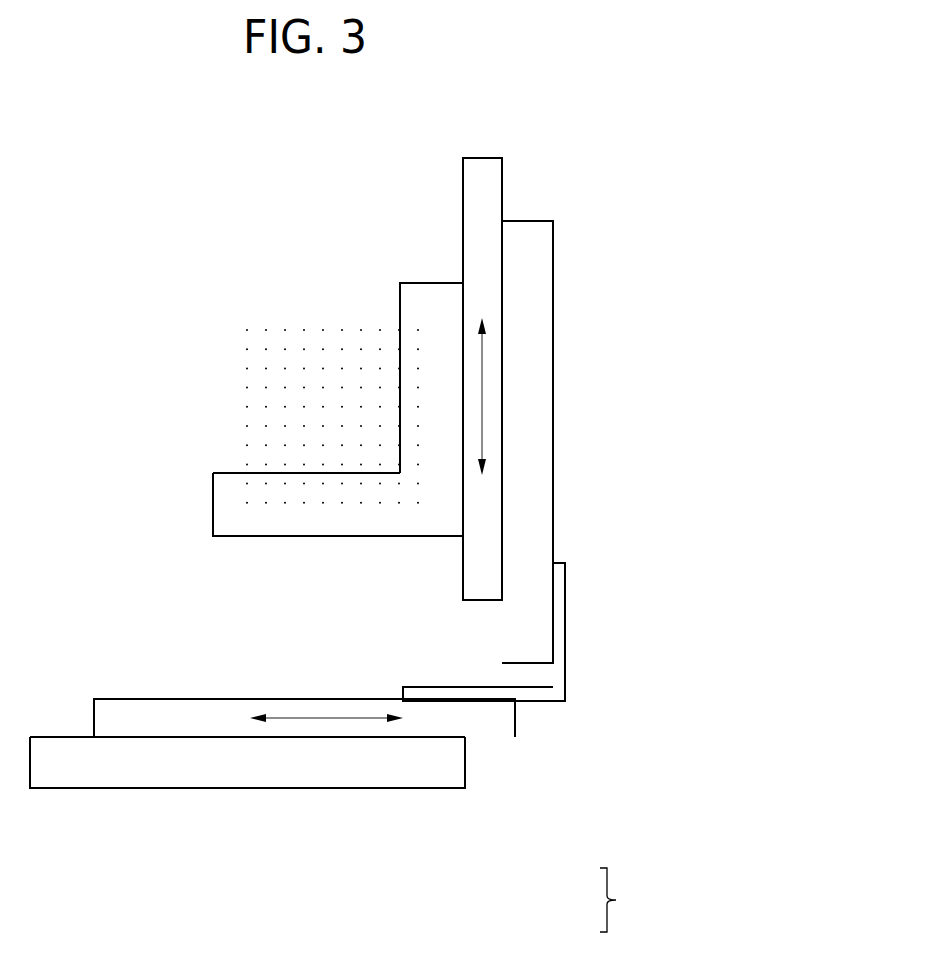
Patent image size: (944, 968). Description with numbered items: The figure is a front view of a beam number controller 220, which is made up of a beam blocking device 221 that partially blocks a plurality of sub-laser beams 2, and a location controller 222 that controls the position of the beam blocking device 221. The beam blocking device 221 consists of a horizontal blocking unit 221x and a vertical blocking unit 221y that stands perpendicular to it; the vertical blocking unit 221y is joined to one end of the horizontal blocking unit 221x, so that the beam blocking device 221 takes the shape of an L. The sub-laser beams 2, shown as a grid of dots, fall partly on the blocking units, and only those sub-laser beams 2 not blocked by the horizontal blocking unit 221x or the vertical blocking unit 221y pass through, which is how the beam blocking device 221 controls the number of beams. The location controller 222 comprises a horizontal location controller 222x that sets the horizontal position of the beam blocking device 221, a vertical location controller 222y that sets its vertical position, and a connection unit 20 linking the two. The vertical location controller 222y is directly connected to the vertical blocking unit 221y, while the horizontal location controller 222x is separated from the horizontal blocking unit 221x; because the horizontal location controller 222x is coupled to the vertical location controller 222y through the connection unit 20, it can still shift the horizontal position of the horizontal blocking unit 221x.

The sub-laser beams 2 is at (342, 349).
The connection unit 20 is at (560, 673).
The beam number controller 220 is at (547, 133).
The beam blocking device 221 is at (338, 351).
The horizontal blocking unit 221x is at (236, 482).
The vertical blocking unit 221y is at (420, 343).
The location controller 222 is at (602, 900).
The horizontal location controller 222x is at (227, 770).
The vertical location controller 222y is at (532, 380).